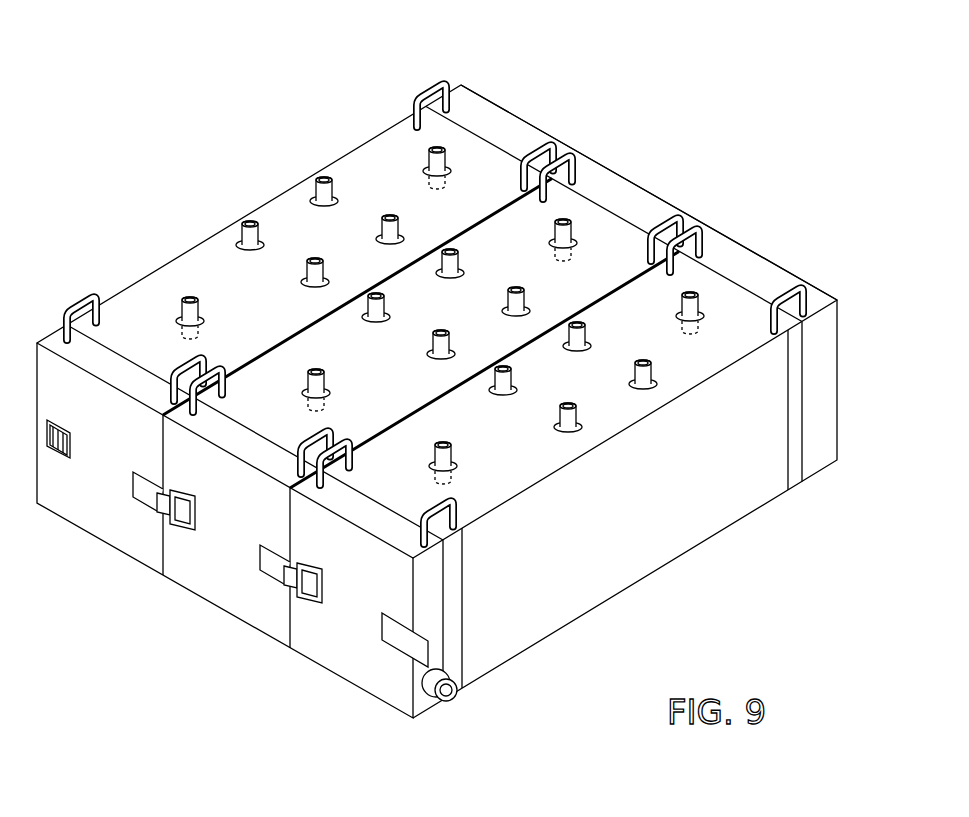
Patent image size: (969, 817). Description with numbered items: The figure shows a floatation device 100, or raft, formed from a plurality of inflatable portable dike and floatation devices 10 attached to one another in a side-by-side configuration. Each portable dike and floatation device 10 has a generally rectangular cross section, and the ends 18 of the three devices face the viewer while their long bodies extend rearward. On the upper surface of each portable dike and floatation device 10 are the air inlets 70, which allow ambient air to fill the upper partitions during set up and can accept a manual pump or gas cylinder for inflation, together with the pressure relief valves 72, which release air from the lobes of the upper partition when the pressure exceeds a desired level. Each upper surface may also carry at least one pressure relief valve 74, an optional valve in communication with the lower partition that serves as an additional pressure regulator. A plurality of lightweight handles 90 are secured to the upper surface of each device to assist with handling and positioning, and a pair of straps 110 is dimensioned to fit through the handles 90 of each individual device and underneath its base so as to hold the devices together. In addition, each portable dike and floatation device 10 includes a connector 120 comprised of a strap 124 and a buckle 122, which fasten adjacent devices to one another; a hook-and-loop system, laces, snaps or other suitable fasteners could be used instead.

The floatation device 100 is at (642, 78).
The portable dike and floatation device 10 is at (532, 102).
The end 18 is at (100, 546).
The air inlet 70 is at (317, 186).
The pressure relief valve 72 is at (243, 236).
The pressure relief valve 74 is at (432, 152).
The handle 90 is at (82, 298).
The strap 110 is at (797, 468).
The connector 120 is at (152, 540).
The buckle 122 is at (56, 460).
The strap 124 is at (147, 500).